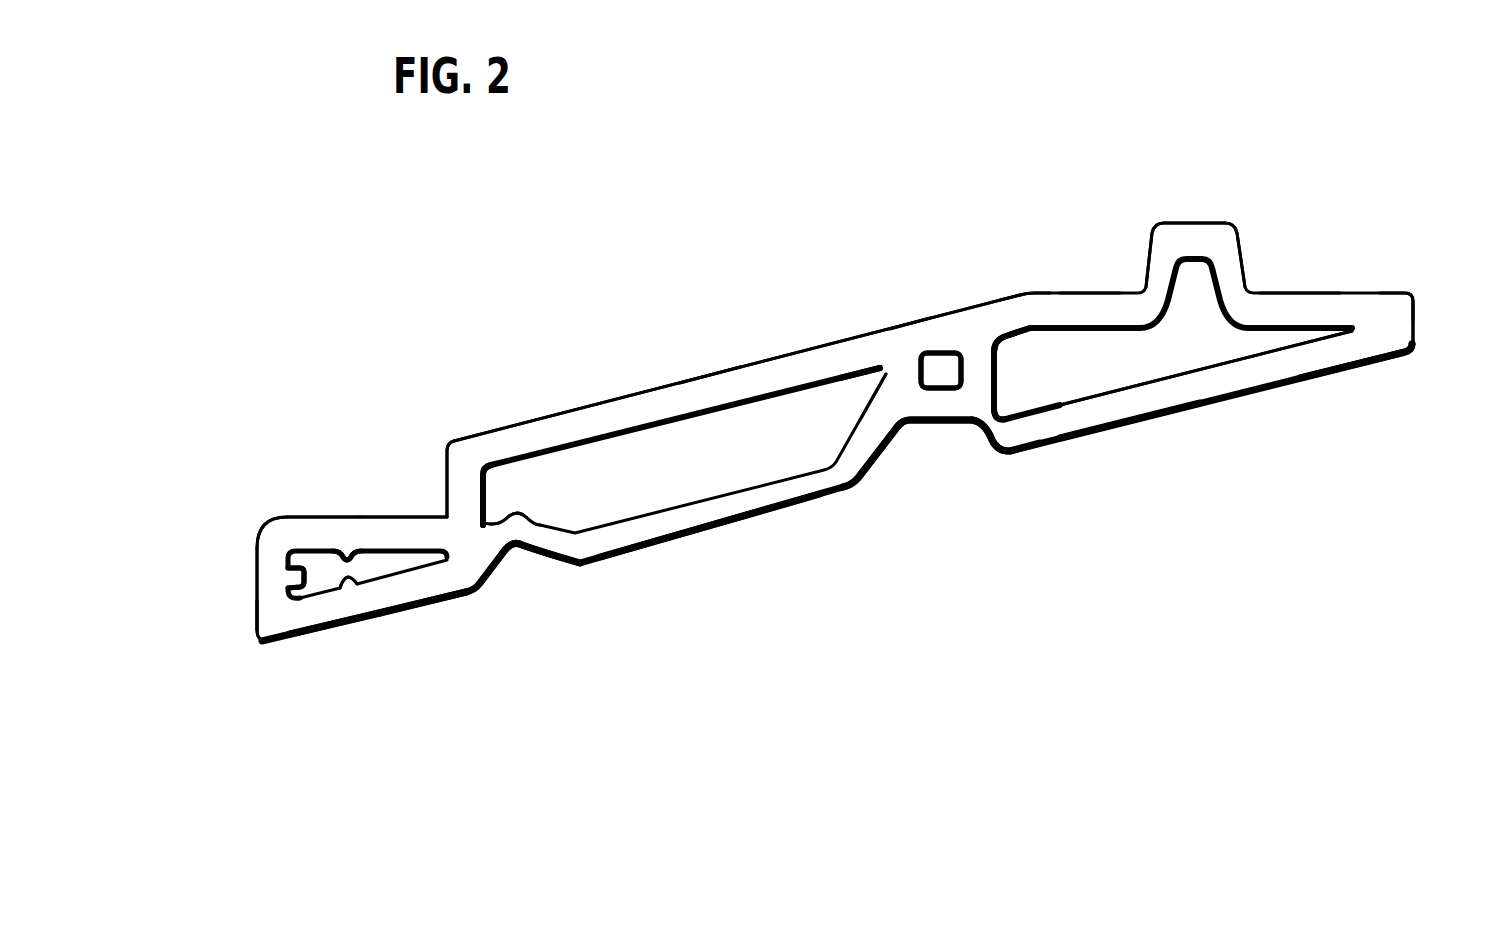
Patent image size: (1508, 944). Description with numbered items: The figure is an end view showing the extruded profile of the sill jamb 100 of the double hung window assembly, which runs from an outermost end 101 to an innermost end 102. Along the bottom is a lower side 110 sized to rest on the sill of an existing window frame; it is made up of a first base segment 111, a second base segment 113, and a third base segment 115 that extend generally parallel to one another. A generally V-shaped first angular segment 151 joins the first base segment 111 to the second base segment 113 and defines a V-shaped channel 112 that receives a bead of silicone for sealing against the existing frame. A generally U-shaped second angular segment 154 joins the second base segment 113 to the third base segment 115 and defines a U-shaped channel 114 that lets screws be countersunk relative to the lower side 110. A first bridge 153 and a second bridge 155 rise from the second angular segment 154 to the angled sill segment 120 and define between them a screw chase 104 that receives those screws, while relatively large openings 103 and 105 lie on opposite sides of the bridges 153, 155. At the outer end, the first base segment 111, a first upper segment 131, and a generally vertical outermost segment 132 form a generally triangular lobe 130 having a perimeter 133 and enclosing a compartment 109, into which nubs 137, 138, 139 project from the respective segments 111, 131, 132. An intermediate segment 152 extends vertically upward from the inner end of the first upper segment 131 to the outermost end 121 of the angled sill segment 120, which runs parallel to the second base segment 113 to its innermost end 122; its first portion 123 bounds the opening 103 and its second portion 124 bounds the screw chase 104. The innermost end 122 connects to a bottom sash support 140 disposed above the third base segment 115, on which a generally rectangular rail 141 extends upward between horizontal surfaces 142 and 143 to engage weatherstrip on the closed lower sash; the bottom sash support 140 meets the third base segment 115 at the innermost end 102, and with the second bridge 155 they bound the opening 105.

The sill jamb 100 is at (256, 185).
The outermost end 101 is at (255, 546).
The innermost end 102 is at (1415, 322).
The relatively large opening 103 is at (777, 467).
The screw chase 104 is at (940, 368).
The relatively large opening 105 is at (1210, 358).
The compartment 109 is at (316, 595).
The lower side 110 is at (1364, 362).
The first base segment 111 is at (410, 585).
The V-shaped channel 112 is at (514, 565).
The second base segment 113 is at (710, 516).
The U-shaped channel 114 is at (968, 448).
The third base segment 115 is at (1127, 412).
The angled sill segment 120 is at (599, 403).
The outermost end of angled sill segment 121 is at (451, 440).
The innermost end of angled sill segment 122 is at (1025, 291).
The first portion of angled sill segment 123 is at (708, 385).
The second portion of angled sill segment 124 is at (915, 347).
The triangular lobe 130 is at (408, 510).
The first upper segment 131 is at (306, 516).
The outermost segment 132 is at (270, 604).
The perimeter 133 is at (266, 522).
The nub 137 is at (345, 586).
The nub 138 is at (344, 557).
The nub 139 is at (298, 578).
The bottom sash support 140 is at (1389, 292).
The rail 141 is at (1190, 222).
The horizontal surface 142 is at (1087, 293).
The horizontal surface 143 is at (1298, 293).
The first angular segment 151 is at (531, 523).
The intermediate segment 152 is at (472, 492).
The first bridge 153 is at (900, 377).
The second angular segment 154 is at (940, 405).
The second bridge 155 is at (986, 368).